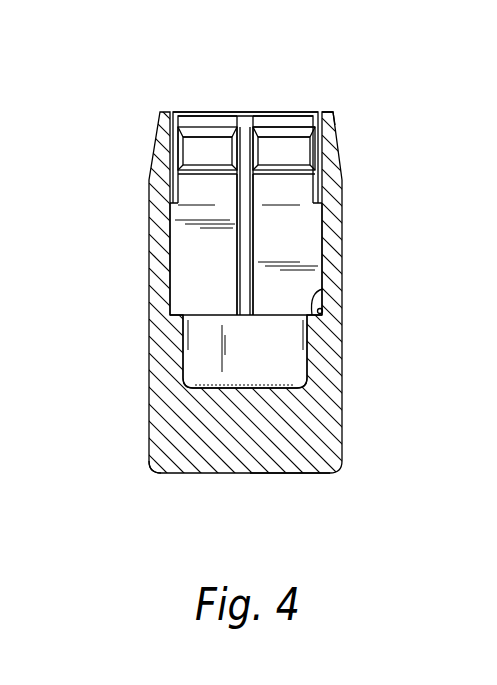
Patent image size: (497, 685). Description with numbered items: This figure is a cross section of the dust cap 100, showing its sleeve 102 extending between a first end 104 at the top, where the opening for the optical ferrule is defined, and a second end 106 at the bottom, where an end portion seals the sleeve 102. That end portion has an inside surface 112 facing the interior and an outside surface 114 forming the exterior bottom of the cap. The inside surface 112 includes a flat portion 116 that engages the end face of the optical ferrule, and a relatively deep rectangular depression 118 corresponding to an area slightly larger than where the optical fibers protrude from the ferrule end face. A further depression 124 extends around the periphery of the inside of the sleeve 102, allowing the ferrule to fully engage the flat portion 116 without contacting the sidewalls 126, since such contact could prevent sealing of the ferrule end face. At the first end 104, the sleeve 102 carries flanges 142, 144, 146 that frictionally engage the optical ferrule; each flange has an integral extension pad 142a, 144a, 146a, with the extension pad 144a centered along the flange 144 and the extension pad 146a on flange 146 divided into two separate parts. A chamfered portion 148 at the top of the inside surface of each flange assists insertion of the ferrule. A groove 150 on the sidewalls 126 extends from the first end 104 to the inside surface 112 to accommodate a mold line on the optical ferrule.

The dust cap 100 is at (102, 92).
The sleeve 102 is at (150, 330).
The first end 104 is at (350, 137).
The second end 106 is at (146, 466).
The inside surface 112 is at (208, 314).
The outside surface 114 is at (313, 473).
The flat portion 116 is at (314, 296).
The depression 118 is at (290, 340).
The depression 124 is at (322, 309).
The sidewalls 126 is at (172, 247).
The flange 142 is at (158, 136).
The extension pad 142a is at (183, 128).
The flange 144 is at (333, 115).
The extension pad 144a is at (305, 128).
The flange 146 is at (276, 120).
The extension pad 146a is at (262, 148).
The chamfered portion 148 is at (166, 138).
The groove 150 is at (247, 200).